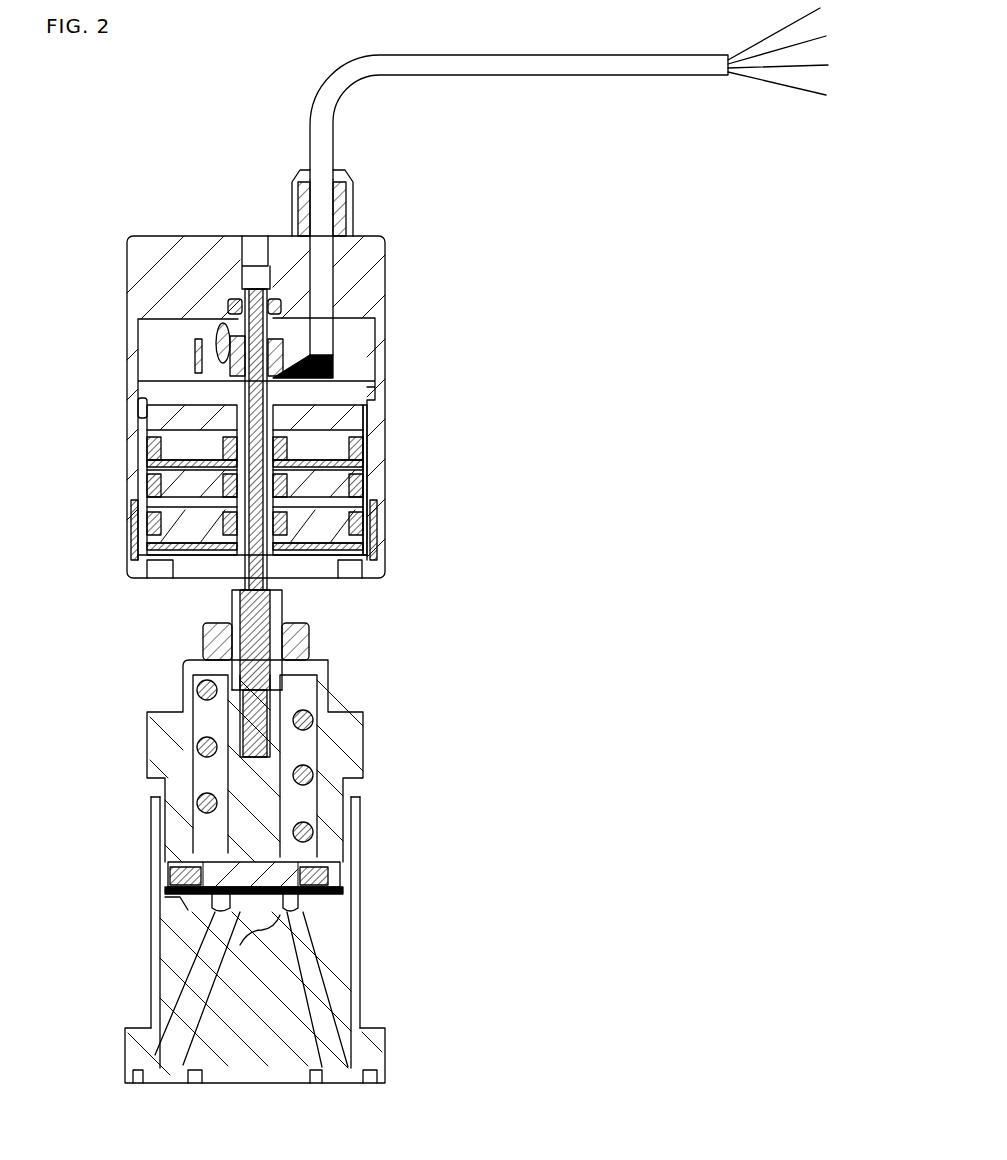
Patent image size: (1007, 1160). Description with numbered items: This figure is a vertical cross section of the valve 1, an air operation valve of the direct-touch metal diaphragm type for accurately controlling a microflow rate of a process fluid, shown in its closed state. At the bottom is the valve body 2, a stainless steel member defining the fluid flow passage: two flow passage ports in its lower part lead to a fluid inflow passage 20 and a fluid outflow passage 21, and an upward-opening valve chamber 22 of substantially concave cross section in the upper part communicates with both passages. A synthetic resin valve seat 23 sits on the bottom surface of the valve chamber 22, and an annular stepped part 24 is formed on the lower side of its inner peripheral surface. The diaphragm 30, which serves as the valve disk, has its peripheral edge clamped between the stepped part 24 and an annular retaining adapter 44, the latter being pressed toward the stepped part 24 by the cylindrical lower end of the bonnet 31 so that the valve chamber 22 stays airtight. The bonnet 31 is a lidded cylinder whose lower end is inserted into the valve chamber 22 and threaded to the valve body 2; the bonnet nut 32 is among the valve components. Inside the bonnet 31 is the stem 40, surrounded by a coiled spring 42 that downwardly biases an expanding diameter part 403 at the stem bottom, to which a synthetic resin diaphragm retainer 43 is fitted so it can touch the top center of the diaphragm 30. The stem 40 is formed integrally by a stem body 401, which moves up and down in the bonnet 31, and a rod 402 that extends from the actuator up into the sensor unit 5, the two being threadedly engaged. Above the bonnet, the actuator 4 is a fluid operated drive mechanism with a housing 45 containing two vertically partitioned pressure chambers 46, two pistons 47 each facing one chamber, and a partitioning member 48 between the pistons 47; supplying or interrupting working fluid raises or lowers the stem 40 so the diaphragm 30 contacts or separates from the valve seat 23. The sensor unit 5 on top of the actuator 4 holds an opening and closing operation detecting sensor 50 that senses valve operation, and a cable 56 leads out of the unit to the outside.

The valve 1 is at (138, 126).
The valve body 2 is at (388, 1055).
The actuator 4 is at (388, 432).
The sensor unit 5 is at (388, 290).
The fluid inflow passage 20 is at (197, 988).
The fluid outflow passage 21 is at (317, 989).
The valve chamber 22 is at (193, 903).
The valve seat 23 is at (283, 920).
The stepped part 24 is at (190, 900).
The diaphragm 30 is at (338, 908).
The bonnet 31 is at (363, 740).
The bonnet nut 32 is at (300, 635).
The stem 40 is at (80, 668).
The stem body 401 is at (227, 722).
The rod 402 is at (232, 600).
The expanding diameter part 403 is at (200, 865).
The spring 42 is at (193, 753).
The diaphragm retainer 43 is at (300, 878).
The retaining adapter 44 is at (345, 880).
The housing 45 is at (385, 478).
The pressure chambers 46 is at (160, 468).
The pistons 47 is at (160, 447).
The partitioning member 48 is at (385, 502).
The opening and closing operation detecting sensor 50 is at (190, 358).
The cable 56 is at (335, 118).